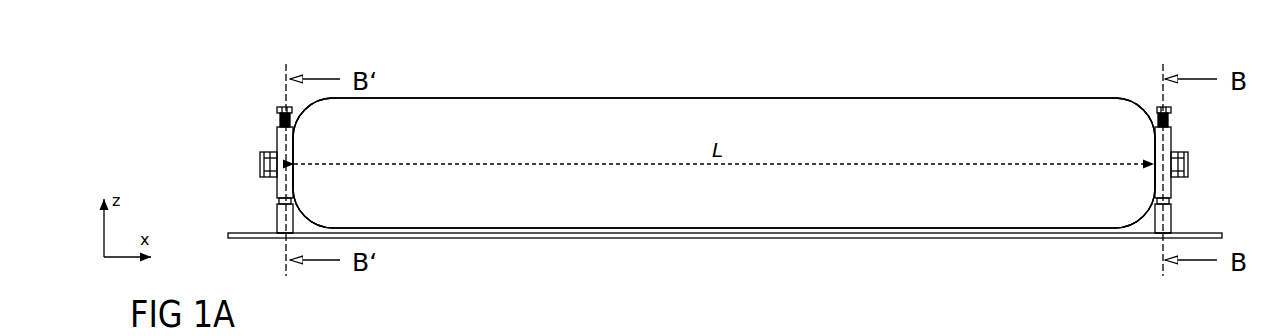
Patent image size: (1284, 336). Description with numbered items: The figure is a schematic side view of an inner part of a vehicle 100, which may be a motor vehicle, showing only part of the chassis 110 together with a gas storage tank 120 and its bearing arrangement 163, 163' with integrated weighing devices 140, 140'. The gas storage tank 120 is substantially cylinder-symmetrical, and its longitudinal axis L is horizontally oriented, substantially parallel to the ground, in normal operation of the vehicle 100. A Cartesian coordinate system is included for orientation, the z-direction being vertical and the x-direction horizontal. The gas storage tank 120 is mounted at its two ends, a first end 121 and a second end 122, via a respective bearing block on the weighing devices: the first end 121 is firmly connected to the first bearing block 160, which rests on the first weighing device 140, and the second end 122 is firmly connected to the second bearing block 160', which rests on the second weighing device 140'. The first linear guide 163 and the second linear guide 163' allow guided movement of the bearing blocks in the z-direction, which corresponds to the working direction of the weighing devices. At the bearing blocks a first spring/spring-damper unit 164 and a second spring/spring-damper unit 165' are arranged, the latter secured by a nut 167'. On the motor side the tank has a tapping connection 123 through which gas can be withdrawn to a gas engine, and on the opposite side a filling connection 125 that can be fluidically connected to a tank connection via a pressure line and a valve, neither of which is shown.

The vehicle 100 is at (712, 56).
The chassis 110 is at (795, 237).
The gas storage tank 120 is at (962, 138).
The first end of the gas storage tank 121 is at (1146, 95).
The second end of the gas storage tank 122 is at (304, 100).
The tapping connection of the gas storage tank 123 is at (1199, 163).
The filling connection of the gas storage tank 125 is at (257, 163).
The first weighing device 140 is at (1197, 215).
The second weighing device 140' is at (242, 215).
The first bearing block 160 is at (1197, 160).
The second bearing block 160' is at (333, 165).
The first linear guide 163 is at (1149, 267).
The second linear guide 163' is at (289, 268).
The first spring/spring-damper unit 164 is at (1175, 122).
The second spring/spring-damper unit 165' is at (238, 113).
The nut 167' is at (265, 78).